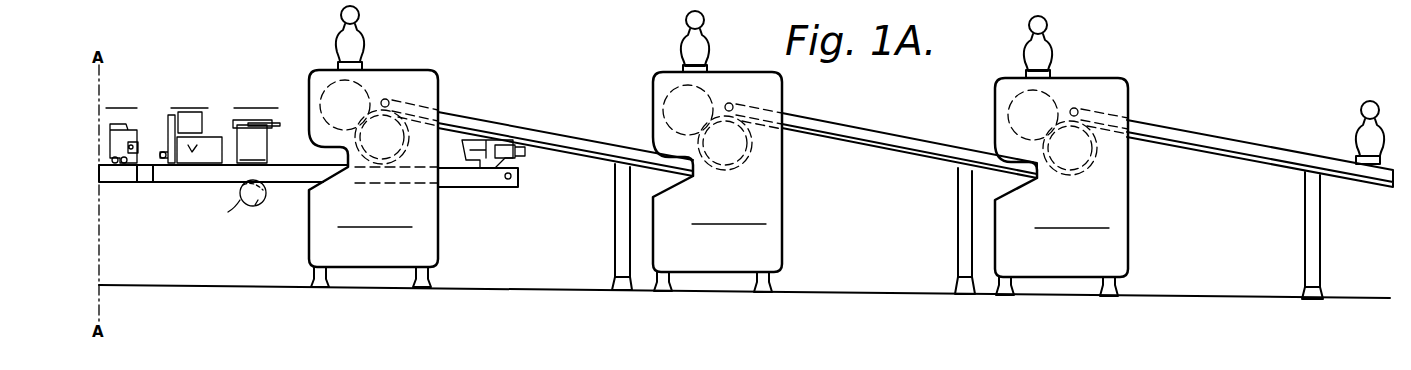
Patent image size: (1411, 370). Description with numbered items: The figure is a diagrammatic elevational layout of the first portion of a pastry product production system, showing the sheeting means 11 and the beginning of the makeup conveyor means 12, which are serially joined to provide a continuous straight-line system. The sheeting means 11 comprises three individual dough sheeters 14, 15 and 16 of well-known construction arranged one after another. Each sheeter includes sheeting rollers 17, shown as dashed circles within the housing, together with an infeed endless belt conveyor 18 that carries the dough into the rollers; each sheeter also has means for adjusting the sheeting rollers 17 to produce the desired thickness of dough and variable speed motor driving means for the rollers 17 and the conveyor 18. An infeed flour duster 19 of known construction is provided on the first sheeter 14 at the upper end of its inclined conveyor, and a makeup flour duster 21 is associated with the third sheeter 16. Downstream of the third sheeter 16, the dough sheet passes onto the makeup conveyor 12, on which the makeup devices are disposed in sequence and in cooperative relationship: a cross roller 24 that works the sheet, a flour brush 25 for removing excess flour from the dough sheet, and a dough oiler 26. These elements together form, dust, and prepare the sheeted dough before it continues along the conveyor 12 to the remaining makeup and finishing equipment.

The sheeting means 11 is at (866, 124).
The makeup conveyor means 12 is at (160, 186).
The first dough sheeter 14 is at (1060, 261).
The second dough sheeter 15 is at (705, 256).
The third dough sheeter 16 is at (355, 254).
The sheeting rollers 17 is at (365, 88).
The infeed endless belt conveyor 18 is at (560, 133).
The infeed flour duster 19 is at (1353, 130).
The makeup flour duster 21 is at (485, 165).
The cross roller 24 is at (255, 201).
The flour brush 25 is at (198, 167).
The dough oiler 26 is at (134, 168).